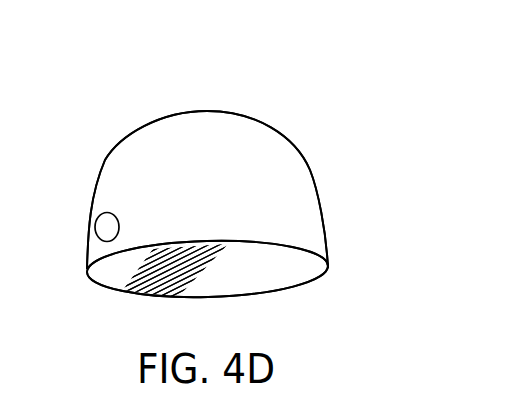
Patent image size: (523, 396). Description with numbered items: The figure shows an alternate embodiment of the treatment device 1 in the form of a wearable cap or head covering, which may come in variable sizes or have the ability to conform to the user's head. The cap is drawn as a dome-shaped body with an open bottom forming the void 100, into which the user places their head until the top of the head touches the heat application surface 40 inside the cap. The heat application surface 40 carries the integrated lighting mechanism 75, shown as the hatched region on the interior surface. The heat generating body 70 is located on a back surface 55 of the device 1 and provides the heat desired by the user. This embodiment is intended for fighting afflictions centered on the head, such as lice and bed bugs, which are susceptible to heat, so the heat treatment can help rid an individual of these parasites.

The treatment device 1 is at (318, 85).
The back surface 55 is at (239, 130).
The heat generating body 70 is at (103, 224).
The integrated lighting mechanism 75 is at (223, 275).
The heat application surface 40 is at (223, 275).
The void 100 is at (97, 288).